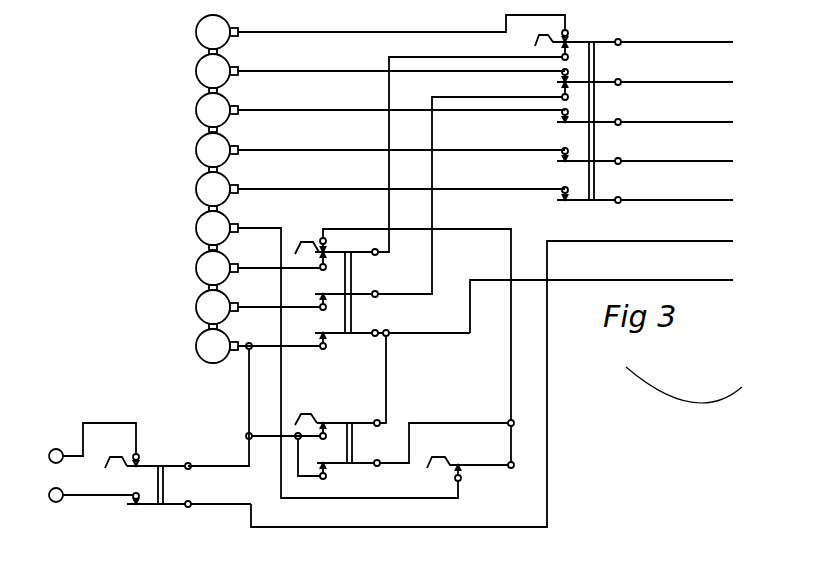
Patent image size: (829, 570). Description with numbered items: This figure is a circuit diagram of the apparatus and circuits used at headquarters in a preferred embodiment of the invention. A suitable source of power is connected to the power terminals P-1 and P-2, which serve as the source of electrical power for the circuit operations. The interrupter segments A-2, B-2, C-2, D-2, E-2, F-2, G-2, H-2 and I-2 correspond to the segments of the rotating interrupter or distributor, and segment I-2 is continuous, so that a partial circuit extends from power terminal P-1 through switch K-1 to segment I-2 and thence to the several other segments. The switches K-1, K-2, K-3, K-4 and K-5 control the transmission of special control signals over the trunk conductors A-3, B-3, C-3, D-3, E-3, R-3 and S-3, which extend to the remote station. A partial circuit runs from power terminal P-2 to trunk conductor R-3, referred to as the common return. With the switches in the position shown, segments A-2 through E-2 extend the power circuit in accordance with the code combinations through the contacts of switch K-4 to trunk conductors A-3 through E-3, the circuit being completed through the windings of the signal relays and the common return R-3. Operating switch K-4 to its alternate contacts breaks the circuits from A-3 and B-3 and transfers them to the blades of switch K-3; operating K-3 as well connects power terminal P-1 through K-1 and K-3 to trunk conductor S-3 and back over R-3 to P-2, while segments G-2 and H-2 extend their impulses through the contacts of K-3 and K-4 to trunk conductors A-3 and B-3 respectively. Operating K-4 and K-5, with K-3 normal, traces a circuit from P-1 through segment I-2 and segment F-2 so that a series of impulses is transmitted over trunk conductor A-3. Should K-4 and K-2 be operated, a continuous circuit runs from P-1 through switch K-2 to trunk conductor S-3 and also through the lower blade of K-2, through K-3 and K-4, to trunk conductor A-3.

The interrupter segment A-2 is at (360, 34).
The interrupter segment B-2 is at (360, 73).
The interrupter segment C-2 is at (360, 112).
The interrupter segment D-2 is at (360, 152).
The interrupter segment E-2 is at (360, 191).
The interrupter segment F-2 is at (307, 354).
The interrupter segment G-2 is at (238, 270).
The interrupter segment H-2 is at (238, 309).
The interrupter segment I-2 is at (240, 402).
The trunk conductor A-3 is at (677, 31).
The trunk conductor B-3 is at (677, 71).
The trunk conductor C-3 is at (677, 111).
The trunk conductor D-3 is at (677, 150).
The trunk conductor E-3 is at (677, 189).
The common return trunk conductor R-3 is at (492, 373).
The trunk conductor S-3 is at (601, 296).
The switch K-1 is at (178, 470).
The switch K-2 is at (401, 435).
The switch K-3 is at (428, 240).
The switch K-4 is at (578, 110).
The switch K-5 is at (470, 458).
The power terminal P-1 is at (90, 444).
The power terminal P-2 is at (88, 508).